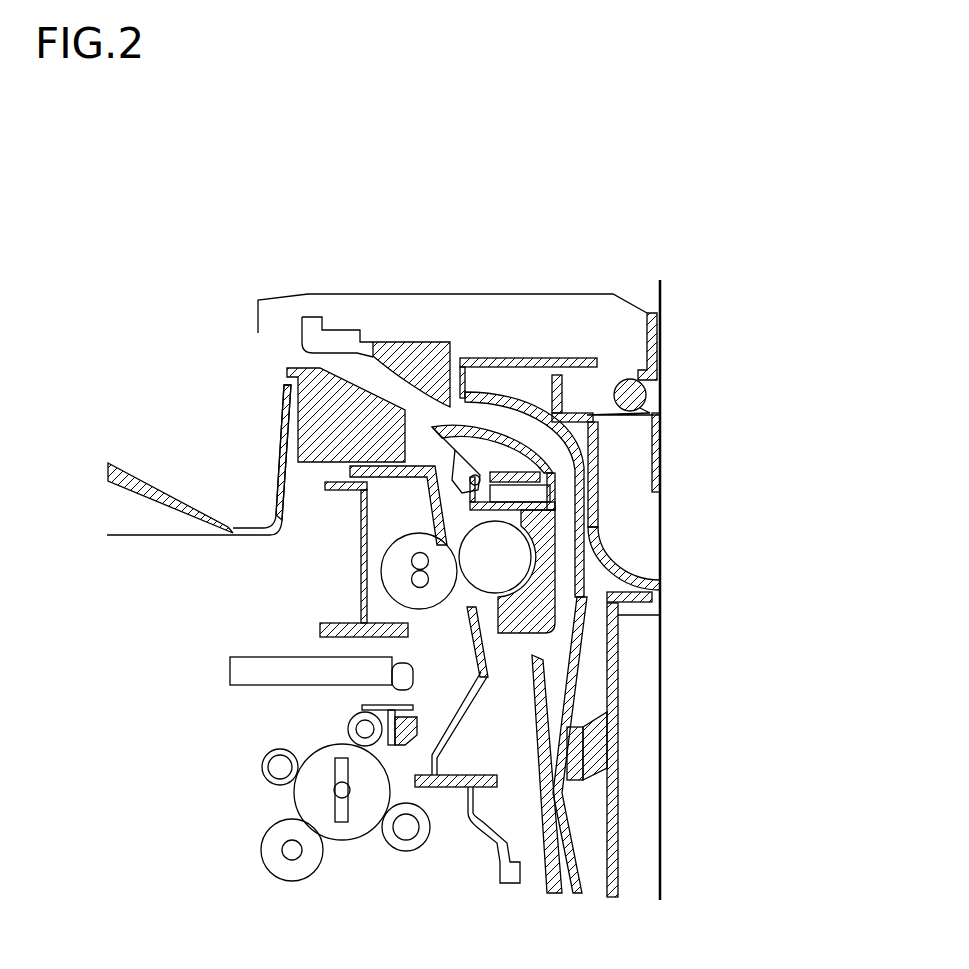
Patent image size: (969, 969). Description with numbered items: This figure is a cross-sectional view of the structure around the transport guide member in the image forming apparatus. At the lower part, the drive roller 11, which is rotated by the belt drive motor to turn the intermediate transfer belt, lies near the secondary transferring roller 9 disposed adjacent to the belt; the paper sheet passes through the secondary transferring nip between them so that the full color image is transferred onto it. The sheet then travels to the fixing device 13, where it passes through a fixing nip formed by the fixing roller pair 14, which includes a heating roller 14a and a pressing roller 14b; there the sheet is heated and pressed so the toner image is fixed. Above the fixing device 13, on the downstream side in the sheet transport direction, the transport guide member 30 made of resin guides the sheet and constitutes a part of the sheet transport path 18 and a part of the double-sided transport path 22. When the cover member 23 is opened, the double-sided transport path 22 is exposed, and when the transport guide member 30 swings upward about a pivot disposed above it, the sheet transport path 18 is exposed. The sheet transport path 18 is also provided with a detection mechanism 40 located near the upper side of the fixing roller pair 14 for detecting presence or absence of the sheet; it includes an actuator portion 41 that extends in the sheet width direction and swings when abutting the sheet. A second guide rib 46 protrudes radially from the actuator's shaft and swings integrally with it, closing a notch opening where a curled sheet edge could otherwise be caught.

The double-sided transport path 22 is at (493, 427).
The second guide rib 46 is at (465, 465).
The transport guide member 30 is at (510, 468).
The actuator portion 41 is at (537, 480).
The detection mechanism 40 is at (632, 642).
The sheet transport path 18 is at (448, 515).
The cover member 23 is at (660, 610).
The heating roller 14a is at (453, 583).
The pressing roller 14b is at (497, 578).
The fixing roller pair 14 is at (657, 626).
The fixing device 13 is at (657, 626).
The drive roller 11 is at (365, 797).
The secondary transferring roller 9 is at (405, 828).